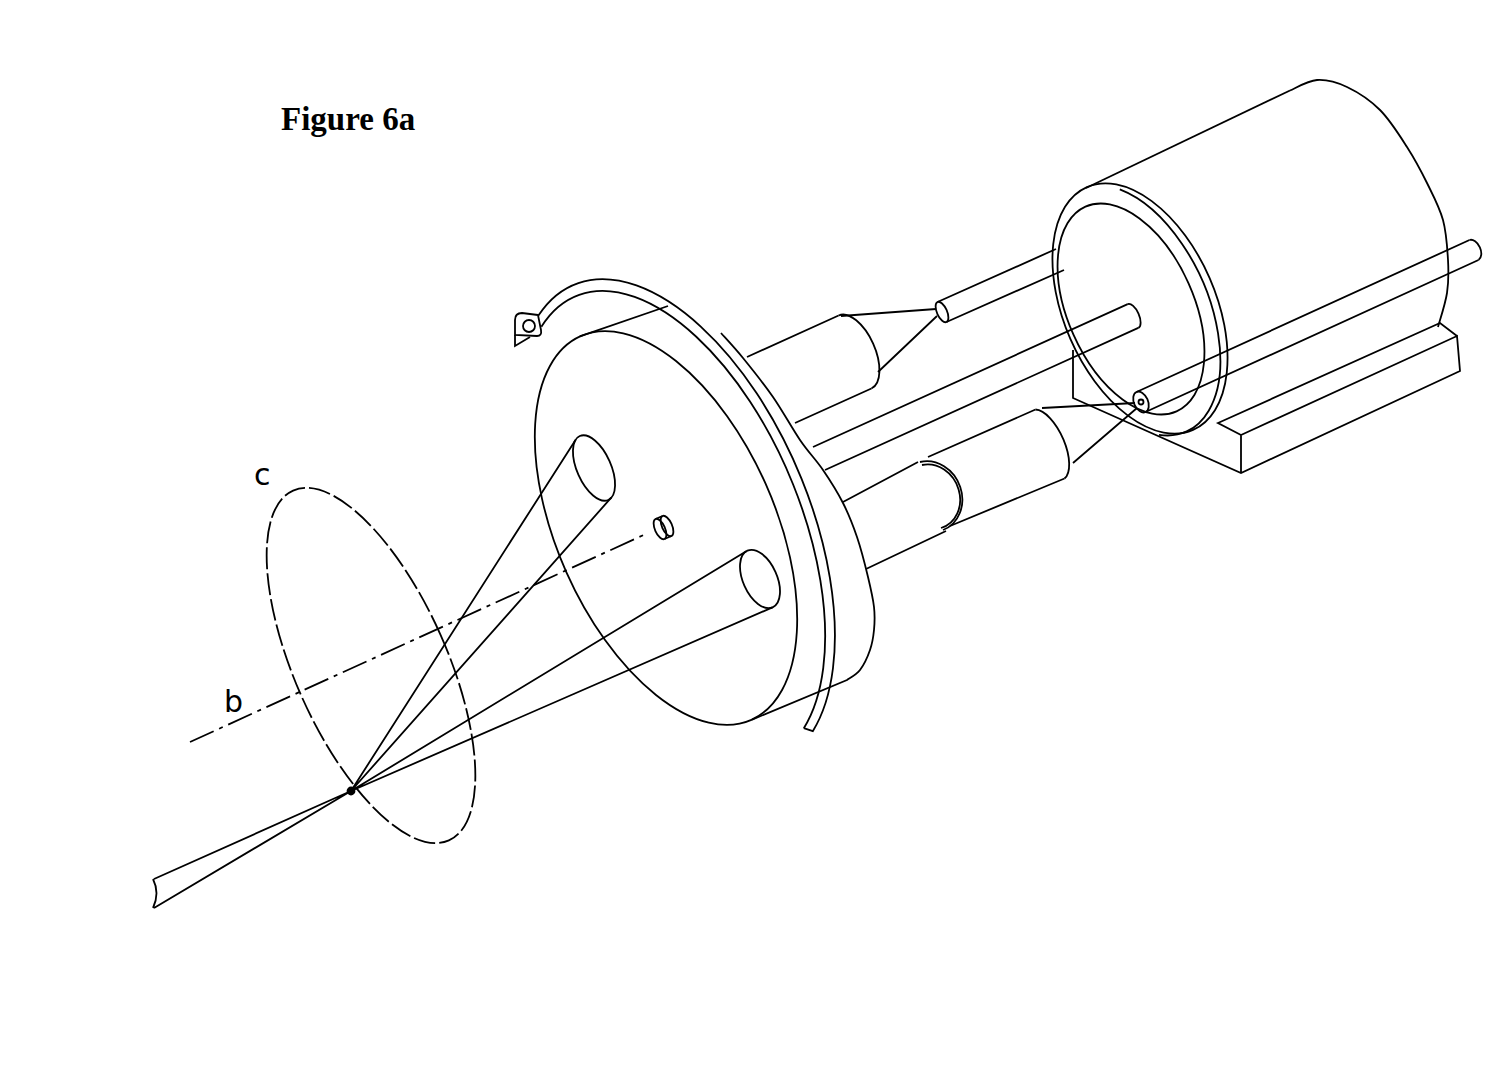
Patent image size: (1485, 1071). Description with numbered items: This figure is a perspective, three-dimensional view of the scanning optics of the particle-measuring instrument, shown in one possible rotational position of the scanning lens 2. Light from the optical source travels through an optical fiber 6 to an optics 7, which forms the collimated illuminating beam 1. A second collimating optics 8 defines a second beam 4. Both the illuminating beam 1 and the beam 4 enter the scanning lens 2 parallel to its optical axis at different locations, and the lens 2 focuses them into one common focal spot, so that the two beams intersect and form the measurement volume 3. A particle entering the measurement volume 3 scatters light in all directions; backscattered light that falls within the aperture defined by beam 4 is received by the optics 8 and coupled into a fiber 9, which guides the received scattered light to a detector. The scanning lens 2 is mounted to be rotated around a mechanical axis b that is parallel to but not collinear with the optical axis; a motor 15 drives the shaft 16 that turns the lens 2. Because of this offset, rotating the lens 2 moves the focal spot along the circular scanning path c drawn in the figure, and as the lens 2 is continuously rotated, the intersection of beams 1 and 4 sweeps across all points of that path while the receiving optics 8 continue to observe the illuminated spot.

The illuminating beam 1 is at (910, 528).
The scanning lens 2 is at (735, 687).
The measurement volume 3 is at (351, 793).
The beam 4 is at (548, 527).
The optical fiber 6 is at (1263, 347).
The optics 7 is at (1010, 477).
The second collimating optics 8 is at (820, 345).
The fiber 9 is at (973, 295).
The motor 15 is at (1234, 180).
The shaft 16 is at (1050, 353).